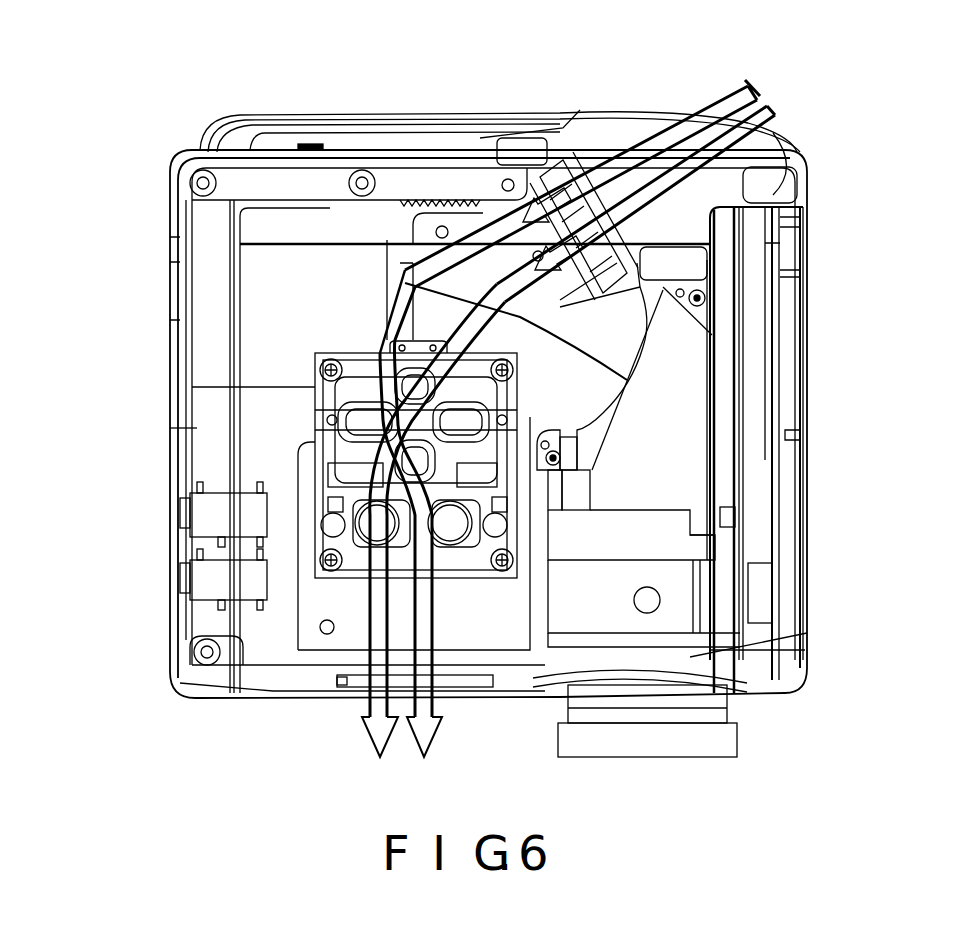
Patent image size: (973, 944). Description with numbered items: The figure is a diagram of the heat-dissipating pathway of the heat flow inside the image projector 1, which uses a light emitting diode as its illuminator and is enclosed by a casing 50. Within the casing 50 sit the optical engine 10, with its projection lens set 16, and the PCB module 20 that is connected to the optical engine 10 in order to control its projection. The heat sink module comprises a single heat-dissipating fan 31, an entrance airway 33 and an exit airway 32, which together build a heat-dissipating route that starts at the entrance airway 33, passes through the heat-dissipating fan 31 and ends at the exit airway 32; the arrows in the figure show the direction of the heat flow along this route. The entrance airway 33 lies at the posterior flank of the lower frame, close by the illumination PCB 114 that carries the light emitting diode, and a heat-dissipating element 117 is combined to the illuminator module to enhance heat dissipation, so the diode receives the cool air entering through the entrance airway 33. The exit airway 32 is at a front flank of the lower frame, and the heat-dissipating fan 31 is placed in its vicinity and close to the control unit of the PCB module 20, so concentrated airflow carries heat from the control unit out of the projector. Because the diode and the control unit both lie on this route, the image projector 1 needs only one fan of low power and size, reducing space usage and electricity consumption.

The image projector 1 is at (866, 158).
The optical engine 10 is at (690, 360).
The projection lens set 16 is at (713, 718).
The PCB module 20 is at (193, 428).
The heat-dissipating fan 31 is at (433, 700).
The exit airway 32 is at (348, 700).
The entrance airway 33 is at (748, 125).
The casing 50 is at (807, 532).
The illumination PCB 114 is at (600, 165).
The heat-dissipating element 117 is at (773, 178).